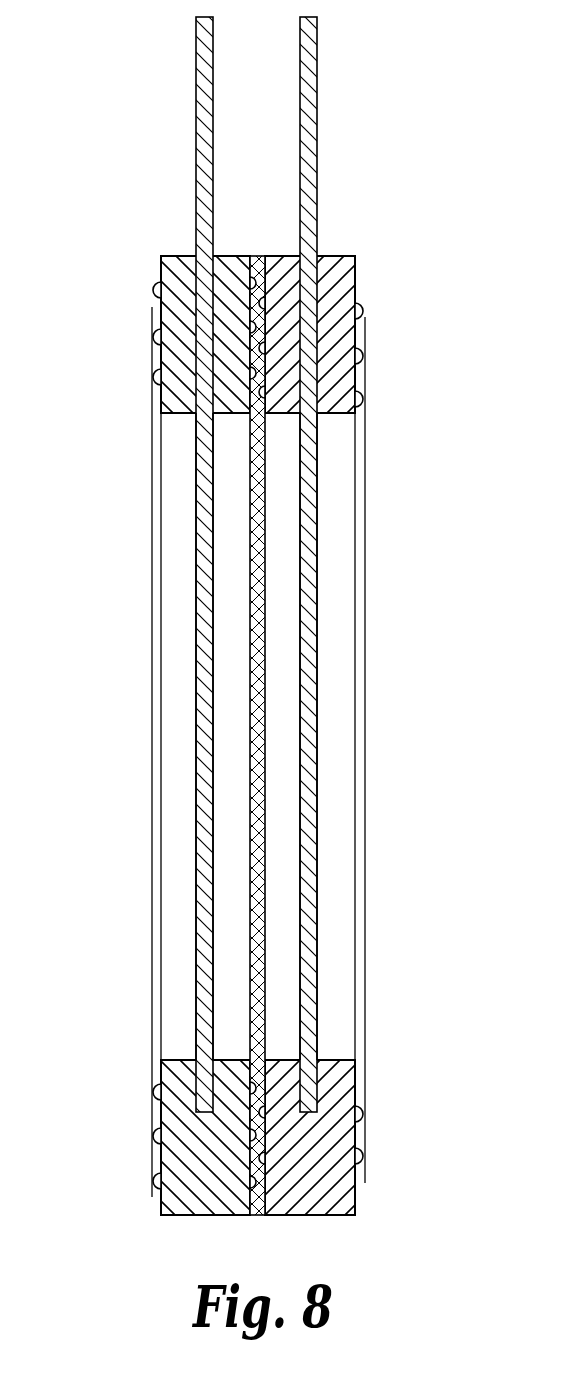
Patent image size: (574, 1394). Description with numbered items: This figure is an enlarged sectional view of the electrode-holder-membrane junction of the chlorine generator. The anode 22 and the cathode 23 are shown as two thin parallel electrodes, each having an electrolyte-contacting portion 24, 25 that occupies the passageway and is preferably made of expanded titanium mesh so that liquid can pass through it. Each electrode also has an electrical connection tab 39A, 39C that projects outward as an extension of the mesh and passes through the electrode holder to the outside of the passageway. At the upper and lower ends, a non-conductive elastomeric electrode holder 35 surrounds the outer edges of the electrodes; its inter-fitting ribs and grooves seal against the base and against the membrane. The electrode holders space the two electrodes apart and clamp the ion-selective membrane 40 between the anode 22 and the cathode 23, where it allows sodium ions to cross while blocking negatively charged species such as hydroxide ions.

The anode 22 is at (364, 214).
The cathode 23 is at (150, 216).
The electrolyte-contacting portion 24 is at (310, 613).
The electrolyte-contacting portion 25 is at (202, 609).
The electrode holder 35 is at (175, 292).
The tab 39A is at (310, 113).
The tab 39C is at (200, 110).
The ion-selective membrane 40 is at (257, 724).